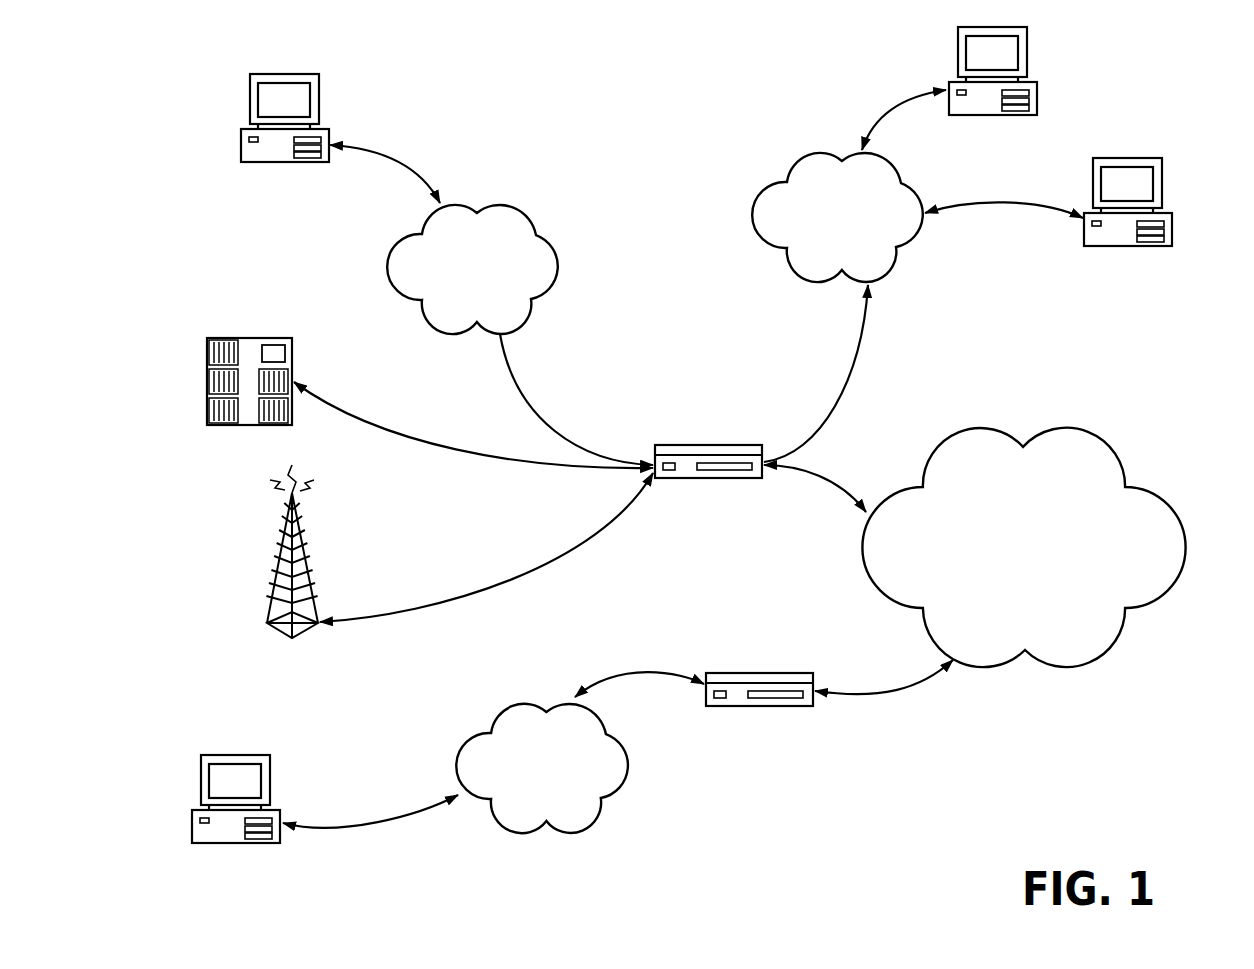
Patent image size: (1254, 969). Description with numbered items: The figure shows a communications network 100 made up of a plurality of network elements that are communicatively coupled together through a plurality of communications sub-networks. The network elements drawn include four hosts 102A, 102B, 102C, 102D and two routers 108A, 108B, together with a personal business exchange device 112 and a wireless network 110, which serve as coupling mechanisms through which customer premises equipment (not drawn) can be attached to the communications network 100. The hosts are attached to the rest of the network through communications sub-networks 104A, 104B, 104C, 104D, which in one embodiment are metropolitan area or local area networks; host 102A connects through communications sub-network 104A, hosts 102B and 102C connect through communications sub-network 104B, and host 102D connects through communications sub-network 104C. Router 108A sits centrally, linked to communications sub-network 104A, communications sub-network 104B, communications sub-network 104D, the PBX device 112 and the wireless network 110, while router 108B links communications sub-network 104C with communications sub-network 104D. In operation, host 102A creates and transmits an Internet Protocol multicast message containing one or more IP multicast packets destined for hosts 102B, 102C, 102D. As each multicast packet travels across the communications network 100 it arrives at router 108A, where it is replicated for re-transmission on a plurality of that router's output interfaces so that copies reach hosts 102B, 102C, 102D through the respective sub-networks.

The communications network 100 is at (565, 100).
The host 102A is at (319, 88).
The host 102B is at (1027, 47).
The host 102C is at (1165, 180).
The host 102D is at (270, 775).
The communications sub-network 104A is at (515, 212).
The communications sub-network 104B is at (905, 190).
The communications sub-network 104C is at (522, 712).
The communications sub-network 104D is at (1112, 452).
The router 108A is at (715, 445).
The router 108B is at (767, 673).
The wireless network 110 is at (303, 547).
The personal business exchange (PBX) device 112 is at (292, 342).